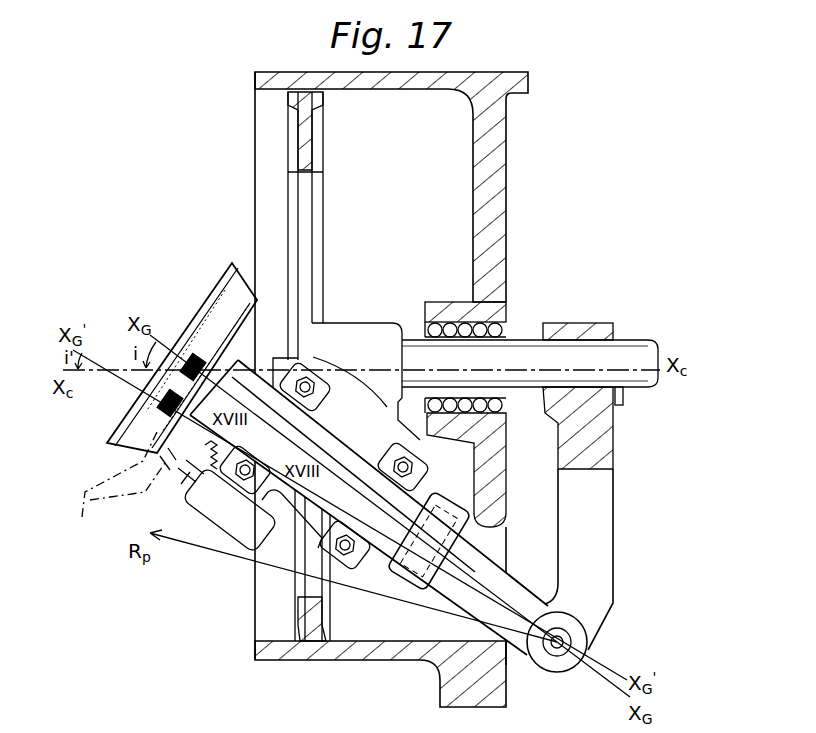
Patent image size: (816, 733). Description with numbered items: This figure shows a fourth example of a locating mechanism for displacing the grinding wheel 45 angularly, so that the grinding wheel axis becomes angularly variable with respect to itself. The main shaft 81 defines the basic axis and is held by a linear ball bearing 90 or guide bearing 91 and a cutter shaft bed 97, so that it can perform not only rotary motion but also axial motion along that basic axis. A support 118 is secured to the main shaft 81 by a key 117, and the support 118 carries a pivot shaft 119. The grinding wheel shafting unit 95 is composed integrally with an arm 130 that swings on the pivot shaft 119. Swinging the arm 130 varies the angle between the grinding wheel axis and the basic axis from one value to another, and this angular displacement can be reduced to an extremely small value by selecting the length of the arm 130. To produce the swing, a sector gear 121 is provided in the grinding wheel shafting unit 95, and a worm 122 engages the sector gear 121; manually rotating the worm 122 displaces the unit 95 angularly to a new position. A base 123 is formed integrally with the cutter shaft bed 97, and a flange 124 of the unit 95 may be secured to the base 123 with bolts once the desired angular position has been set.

The grinding wheel 45 is at (233, 262).
The main shaft 81 is at (633, 347).
The linear ball bearing 90 is at (505, 325).
The guide bearing 91 is at (297, 92).
The grinding wheel shafting unit 95 is at (368, 563).
The cutter shaft bed 97 is at (367, 328).
The key 117 is at (620, 405).
The support 118 is at (604, 508).
The pivot shaft 119 is at (558, 650).
The sector gear 121 is at (190, 450).
The worm 122 is at (165, 457).
The base 123 is at (213, 508).
The flange 124 is at (267, 516).
The arm 130 is at (455, 601).